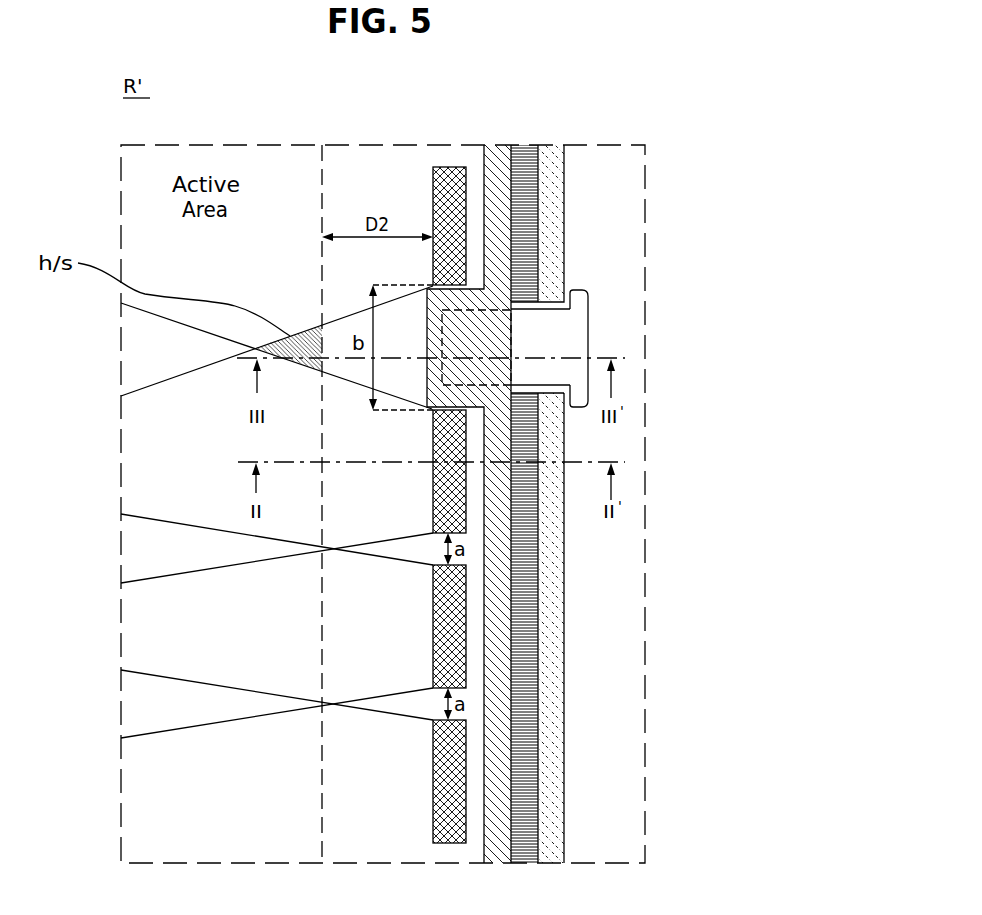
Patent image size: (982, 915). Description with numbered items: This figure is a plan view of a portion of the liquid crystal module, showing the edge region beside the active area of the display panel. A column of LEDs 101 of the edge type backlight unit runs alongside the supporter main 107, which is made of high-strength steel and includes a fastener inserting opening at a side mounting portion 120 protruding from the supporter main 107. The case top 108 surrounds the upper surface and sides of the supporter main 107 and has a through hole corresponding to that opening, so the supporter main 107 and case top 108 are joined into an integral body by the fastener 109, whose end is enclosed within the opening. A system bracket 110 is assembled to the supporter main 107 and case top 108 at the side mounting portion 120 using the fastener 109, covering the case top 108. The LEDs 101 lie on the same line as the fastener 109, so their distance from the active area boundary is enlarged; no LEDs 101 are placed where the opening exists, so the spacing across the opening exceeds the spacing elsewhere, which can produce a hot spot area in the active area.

The LEDs 101 is at (450, 175).
The supporter main 107 is at (497, 157).
The case top 108 is at (525, 157).
The fastener 109 is at (573, 335).
The system bracket 110 is at (553, 157).
The side mounting portion 120 is at (620, 298).